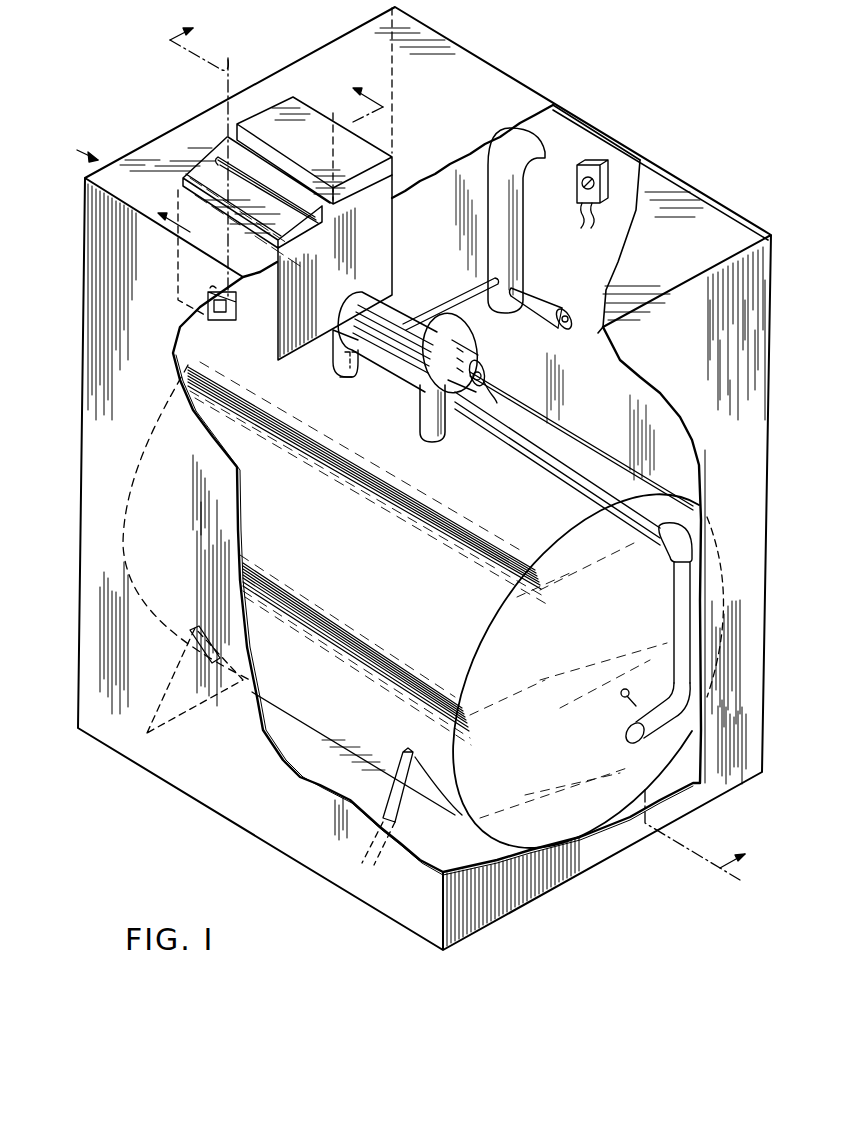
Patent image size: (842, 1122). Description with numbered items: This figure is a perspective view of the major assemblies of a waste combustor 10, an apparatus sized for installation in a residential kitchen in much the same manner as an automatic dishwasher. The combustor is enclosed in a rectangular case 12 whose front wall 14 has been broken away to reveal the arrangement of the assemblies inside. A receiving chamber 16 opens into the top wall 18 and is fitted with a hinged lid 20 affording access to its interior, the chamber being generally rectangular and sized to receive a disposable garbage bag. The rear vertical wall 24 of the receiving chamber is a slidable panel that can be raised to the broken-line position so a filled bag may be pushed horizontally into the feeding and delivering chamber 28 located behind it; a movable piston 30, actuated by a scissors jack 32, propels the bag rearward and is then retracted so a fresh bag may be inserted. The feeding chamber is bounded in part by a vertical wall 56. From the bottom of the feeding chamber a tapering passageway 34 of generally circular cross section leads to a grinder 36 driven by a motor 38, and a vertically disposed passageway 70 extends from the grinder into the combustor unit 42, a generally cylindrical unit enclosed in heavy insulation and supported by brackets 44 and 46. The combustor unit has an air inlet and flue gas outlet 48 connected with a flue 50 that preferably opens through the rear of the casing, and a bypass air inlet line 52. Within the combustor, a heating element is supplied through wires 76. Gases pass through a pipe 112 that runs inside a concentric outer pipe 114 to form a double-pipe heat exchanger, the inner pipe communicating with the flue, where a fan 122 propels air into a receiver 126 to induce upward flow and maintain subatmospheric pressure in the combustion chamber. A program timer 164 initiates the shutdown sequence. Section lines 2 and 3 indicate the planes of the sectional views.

The waste combustor 10 is at (74, 148).
The rectangular case 12 is at (530, 105).
The front wall 14 is at (84, 457).
The receiving chamber 16 is at (175, 163).
The top wall 18 is at (463, 63).
The hinged lid 20 is at (247, 203).
The rear vertical wall 24 is at (213, 123).
The feeding and delivering chamber 28 is at (380, 148).
The movable piston 30 is at (236, 313).
The scissors jack 32 is at (213, 288).
The tapering passageway 34 is at (400, 307).
The grinder 36 is at (467, 322).
The motor 38 is at (478, 363).
The combustor unit 42 is at (352, 565).
The bracket 44 is at (417, 833).
The bracket 46 is at (177, 720).
The air inlet and flue gas outlet 48 is at (337, 382).
The flue 50 is at (508, 223).
The bypass air inlet line 52 is at (507, 447).
The vertical wall 56 is at (385, 243).
The vertically disposed passageway 70 is at (450, 430).
The wires 76 is at (633, 704).
The pipe 112 is at (353, 365).
The outer pipe 114 is at (347, 383).
The fan 122 is at (567, 330).
The receiver 126 is at (543, 293).
The program timer 164 is at (597, 165).
The section line 2— 2 is at (267, 120).
The section line 3— 3 is at (464, 446).